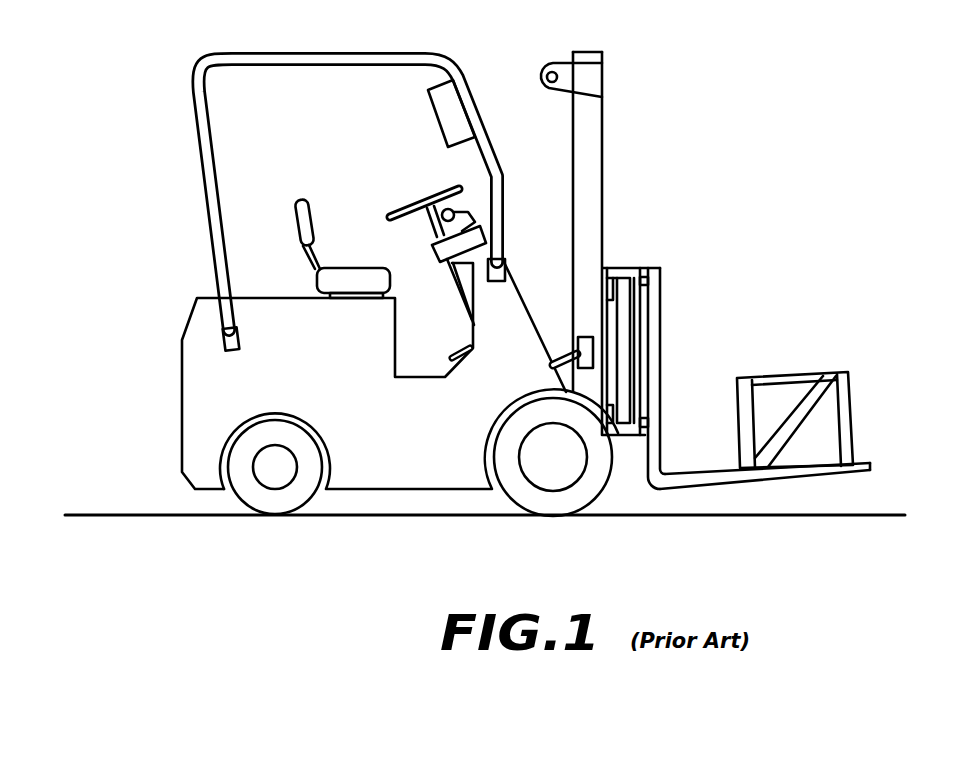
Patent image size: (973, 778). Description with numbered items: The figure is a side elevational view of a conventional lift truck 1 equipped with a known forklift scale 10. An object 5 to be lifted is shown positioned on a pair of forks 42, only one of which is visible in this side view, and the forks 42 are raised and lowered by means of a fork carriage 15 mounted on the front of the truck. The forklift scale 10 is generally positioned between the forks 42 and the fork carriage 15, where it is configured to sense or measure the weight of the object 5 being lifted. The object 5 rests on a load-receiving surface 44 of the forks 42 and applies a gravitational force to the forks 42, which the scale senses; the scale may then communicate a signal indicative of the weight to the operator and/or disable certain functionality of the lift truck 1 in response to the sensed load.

The lift truck 1 is at (168, 50).
The fork carriage 15 is at (631, 223).
The forklift scale 10 is at (675, 261).
The load-receiving surface 44 is at (705, 462).
The forks 42 is at (828, 473).
The object 5 is at (843, 418).